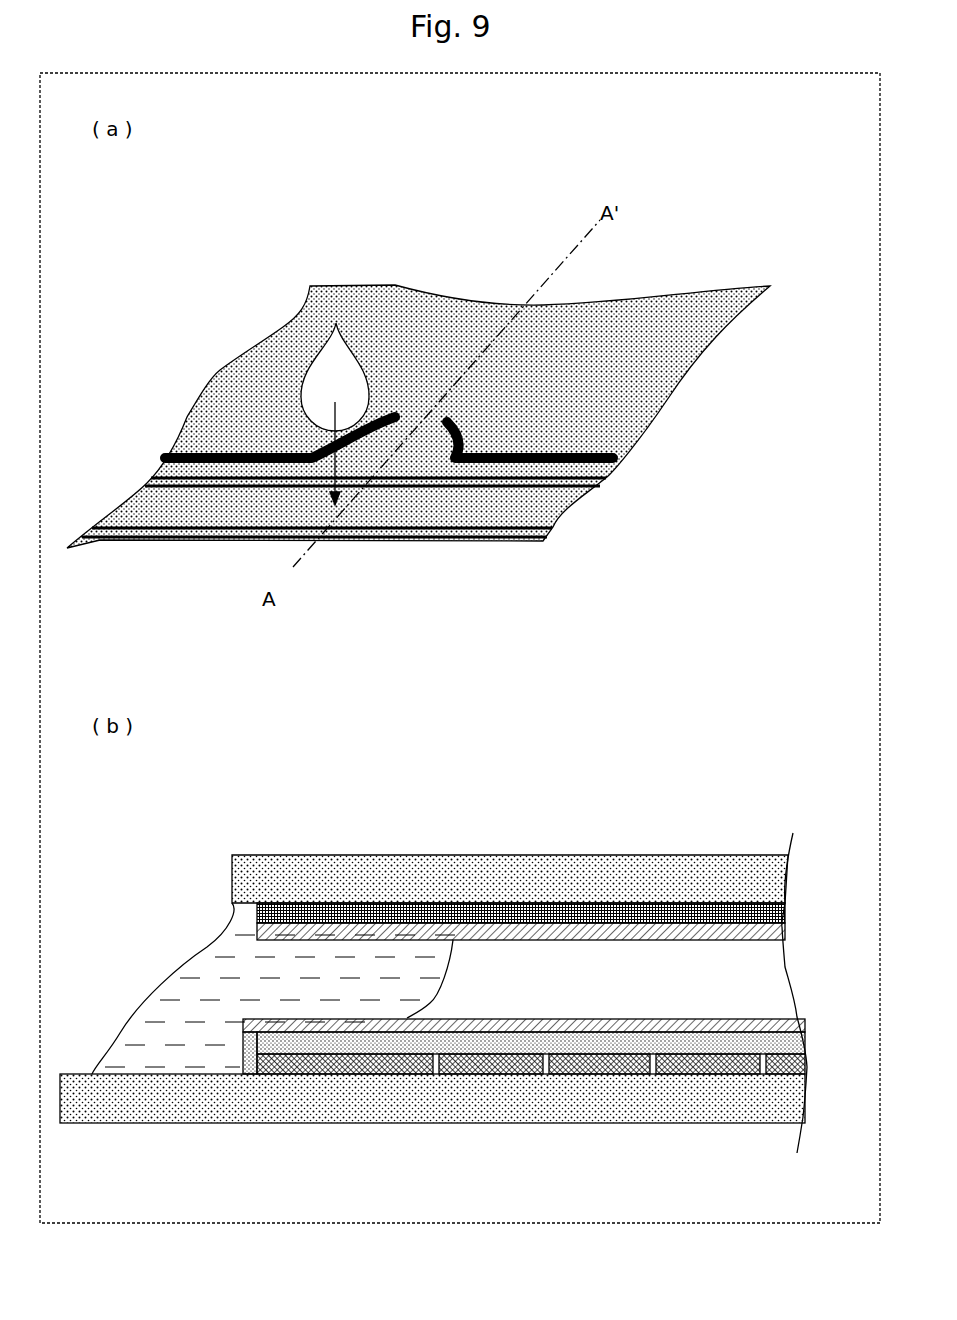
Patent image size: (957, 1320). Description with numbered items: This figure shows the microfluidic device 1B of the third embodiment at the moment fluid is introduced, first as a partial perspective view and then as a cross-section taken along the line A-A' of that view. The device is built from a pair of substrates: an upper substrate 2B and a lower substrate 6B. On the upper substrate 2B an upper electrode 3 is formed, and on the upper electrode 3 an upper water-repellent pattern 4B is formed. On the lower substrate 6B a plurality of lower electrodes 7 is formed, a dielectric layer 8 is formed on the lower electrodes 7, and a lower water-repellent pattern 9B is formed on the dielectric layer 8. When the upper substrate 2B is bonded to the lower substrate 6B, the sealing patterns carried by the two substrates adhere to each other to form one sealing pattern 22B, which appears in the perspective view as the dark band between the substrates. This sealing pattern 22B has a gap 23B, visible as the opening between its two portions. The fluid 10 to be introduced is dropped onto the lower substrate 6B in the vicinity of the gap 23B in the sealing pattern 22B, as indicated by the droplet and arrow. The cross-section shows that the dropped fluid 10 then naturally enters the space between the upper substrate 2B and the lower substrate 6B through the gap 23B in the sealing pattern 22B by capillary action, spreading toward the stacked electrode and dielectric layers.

The microfluidic device 1B is at (790, 190).
The upper substrate 2B is at (685, 315).
The upper electrode 3 is at (418, 917).
The upper water-repellent pattern 4B is at (342, 930).
The lower substrate 6B is at (473, 545).
The lower electrodes 7 is at (733, 1077).
The dielectric layer 8 is at (395, 1043).
The lower water-repellent pattern 9B is at (242, 1028).
The fluid 10 is at (320, 390).
The sealing pattern 22B is at (530, 463).
The gap 23B is at (405, 435).